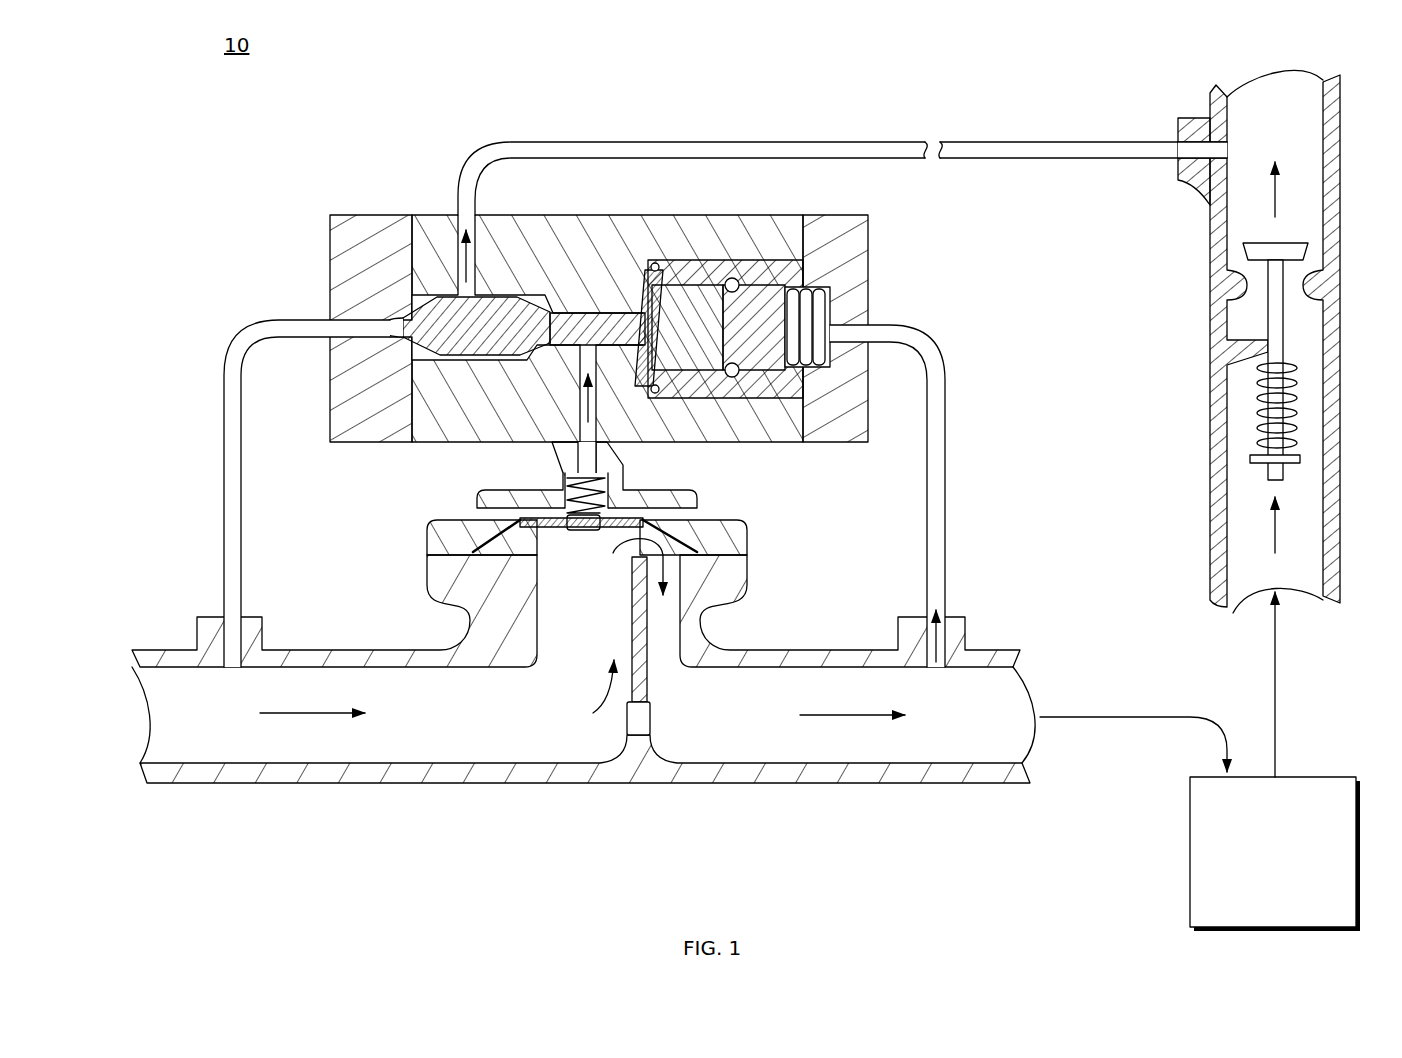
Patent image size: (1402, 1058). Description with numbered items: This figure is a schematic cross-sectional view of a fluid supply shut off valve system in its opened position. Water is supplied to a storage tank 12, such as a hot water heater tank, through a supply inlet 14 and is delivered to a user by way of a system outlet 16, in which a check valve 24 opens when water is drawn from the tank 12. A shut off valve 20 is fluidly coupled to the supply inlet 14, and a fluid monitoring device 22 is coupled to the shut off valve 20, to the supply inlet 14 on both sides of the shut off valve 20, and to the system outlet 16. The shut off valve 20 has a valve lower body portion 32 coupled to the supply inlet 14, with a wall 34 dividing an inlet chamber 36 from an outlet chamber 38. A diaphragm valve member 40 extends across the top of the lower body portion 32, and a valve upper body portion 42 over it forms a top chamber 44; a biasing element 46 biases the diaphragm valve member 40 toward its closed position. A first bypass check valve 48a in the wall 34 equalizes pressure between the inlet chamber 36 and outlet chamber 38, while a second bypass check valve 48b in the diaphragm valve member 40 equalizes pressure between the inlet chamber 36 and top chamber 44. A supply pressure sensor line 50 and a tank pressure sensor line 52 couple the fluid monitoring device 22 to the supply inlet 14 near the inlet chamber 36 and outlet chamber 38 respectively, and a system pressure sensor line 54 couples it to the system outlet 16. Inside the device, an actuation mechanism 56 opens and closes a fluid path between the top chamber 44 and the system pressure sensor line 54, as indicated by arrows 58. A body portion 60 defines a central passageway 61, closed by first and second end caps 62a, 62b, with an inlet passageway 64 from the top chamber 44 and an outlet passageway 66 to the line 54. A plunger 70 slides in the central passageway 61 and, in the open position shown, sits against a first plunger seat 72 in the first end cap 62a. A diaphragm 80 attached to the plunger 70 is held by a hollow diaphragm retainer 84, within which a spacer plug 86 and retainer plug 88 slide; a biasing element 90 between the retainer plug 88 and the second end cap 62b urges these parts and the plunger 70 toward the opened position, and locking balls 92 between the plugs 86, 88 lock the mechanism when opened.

The storage tank 12 is at (1200, 761).
The supply inlet 14 is at (487, 782).
The system outlet 16 is at (1340, 182).
The shut off valve 20 is at (619, 596).
The fluid monitoring device 22 is at (982, 228).
The check valve 24 is at (1296, 338).
The valve lower body portion 32 is at (428, 568).
The wall 34 is at (628, 633).
The inlet chamber 36 is at (618, 578).
The outlet chamber 38 is at (684, 681).
The diaphragm valve member 40 is at (497, 520).
The valve upper body portion 42 is at (440, 533).
The top chamber 44 is at (690, 528).
The biasing element 46 is at (562, 478).
The first bypass check valve 48a is at (626, 722).
The second bypass check valve 48b is at (592, 532).
The supply pressure sensor line 50 is at (226, 470).
The tank pressure sensor line 52 is at (945, 490).
The system pressure sensor line 54 is at (795, 142).
The actuation mechanism 56 is at (527, 266).
The arrows 58 is at (570, 328).
The body portion 60 is at (722, 260).
The central passageway 61 is at (457, 362).
The first end cap 62a is at (333, 215).
The second end cap 62b is at (822, 215).
The inlet passageway 64 is at (523, 360).
The outlet passageway 66 is at (462, 200).
The plunger 70 is at (420, 430).
The first plunger seat 72 is at (388, 330).
The diaphragm 80 is at (657, 272).
The diaphragm retainer 84 is at (766, 390).
The spacer plug 86 is at (712, 370).
The retainer plug 88 is at (800, 392).
The biasing element 90 is at (838, 305).
The locking balls 92 is at (740, 282).